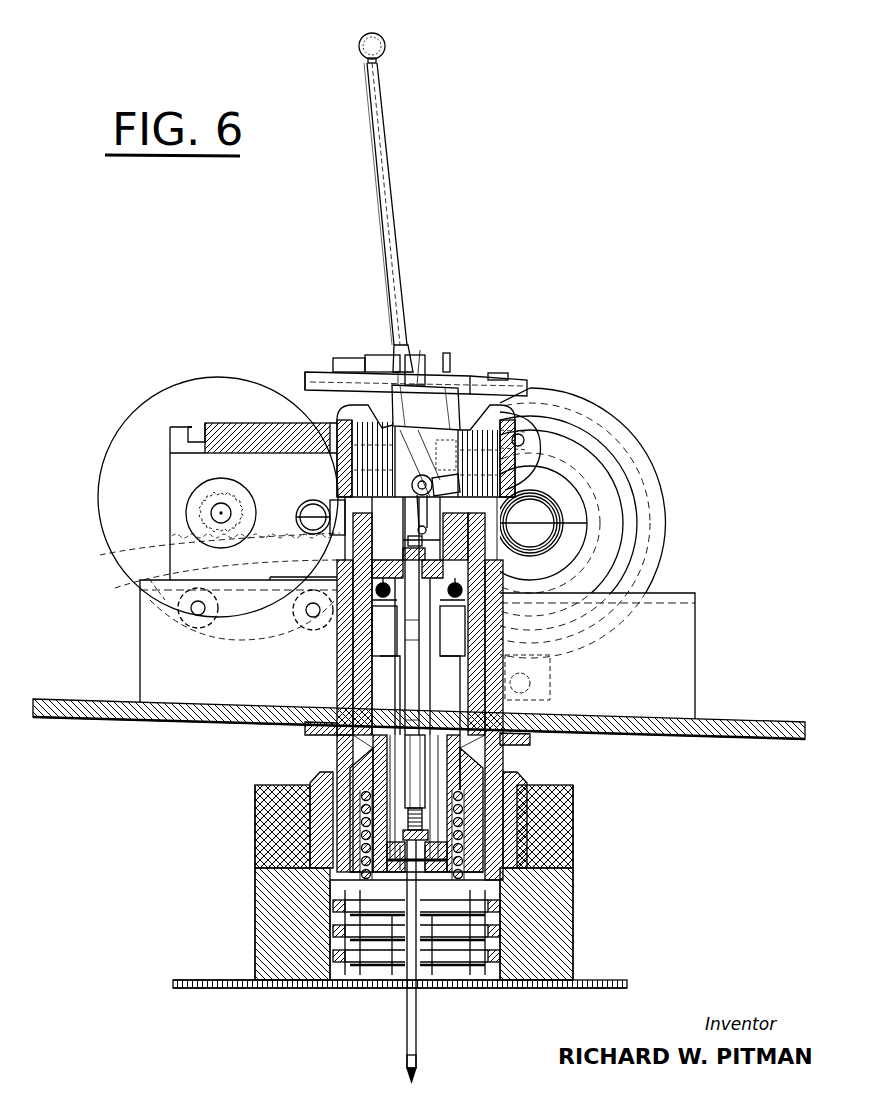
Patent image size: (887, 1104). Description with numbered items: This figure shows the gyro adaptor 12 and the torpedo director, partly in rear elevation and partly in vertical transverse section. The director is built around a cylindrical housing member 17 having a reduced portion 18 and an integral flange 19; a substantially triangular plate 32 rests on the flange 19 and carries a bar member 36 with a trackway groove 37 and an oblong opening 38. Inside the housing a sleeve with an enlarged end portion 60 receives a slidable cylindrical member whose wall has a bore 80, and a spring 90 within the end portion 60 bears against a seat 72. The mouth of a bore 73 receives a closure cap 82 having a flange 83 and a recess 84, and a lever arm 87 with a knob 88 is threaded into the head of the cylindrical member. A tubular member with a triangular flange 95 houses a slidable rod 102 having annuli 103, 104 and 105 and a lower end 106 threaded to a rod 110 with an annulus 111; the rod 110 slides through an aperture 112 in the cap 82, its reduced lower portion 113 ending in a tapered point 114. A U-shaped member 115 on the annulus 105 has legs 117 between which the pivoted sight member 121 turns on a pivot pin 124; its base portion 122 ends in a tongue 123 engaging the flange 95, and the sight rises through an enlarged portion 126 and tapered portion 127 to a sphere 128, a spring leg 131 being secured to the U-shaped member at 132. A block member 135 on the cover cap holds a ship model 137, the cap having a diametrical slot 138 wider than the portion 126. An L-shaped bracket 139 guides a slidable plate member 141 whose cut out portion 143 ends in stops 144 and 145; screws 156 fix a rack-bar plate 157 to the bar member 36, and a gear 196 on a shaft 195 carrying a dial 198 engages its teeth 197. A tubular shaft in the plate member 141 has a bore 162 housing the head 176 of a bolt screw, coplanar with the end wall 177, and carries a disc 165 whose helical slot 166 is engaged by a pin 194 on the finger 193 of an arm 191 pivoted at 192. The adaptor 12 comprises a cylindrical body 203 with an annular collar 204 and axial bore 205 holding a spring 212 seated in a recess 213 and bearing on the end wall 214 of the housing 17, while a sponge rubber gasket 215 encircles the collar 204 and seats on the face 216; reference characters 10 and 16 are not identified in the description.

The tool assembly 10 is at (210, 972).
The adaptor 12 is at (560, 975).
The housing bottom 16 is at (552, 988).
The cylindrical housing member 17 is at (492, 752).
The reduced portion 18 is at (345, 561).
The integral flange 19 is at (532, 740).
The plate 32 is at (95, 722).
The bar member 36 is at (145, 672).
The trackway groove 37 is at (148, 598).
The oblong opening 38 is at (337, 667).
The enlarged end portion 60 is at (510, 800).
The seat 72 is at (462, 783).
The bore 73 is at (340, 918).
The bore 80 is at (416, 810).
The closure cap 82 is at (435, 960).
The flange 83 is at (478, 950).
The recess 84 is at (403, 935).
The lever arm 87 is at (575, 662).
The knob 88 is at (560, 683).
The spring 90 is at (575, 835).
The triangular shaped flange 95 is at (545, 400).
The rod 102 is at (337, 674).
The annulus 103 is at (348, 770).
The annulus 104 is at (337, 648).
The annulus 105 is at (474, 616).
The end of rod 106 is at (440, 793).
The rod 110 is at (402, 960).
The annulus 111 is at (423, 824).
The aperture 112 is at (358, 960).
The lower portion 113 is at (416, 1033).
The end 114 is at (385, 1077).
The U-shaped member 115 is at (397, 540).
The legs 117 is at (456, 536).
The pivoted sight member 121 is at (415, 283).
The base portion 122 is at (439, 488).
The tongue 123 is at (444, 461).
The pivot pin 124 is at (426, 451).
The enlarged portion 126 is at (425, 362).
The tapered portion 127 is at (397, 178).
The sphere 128 is at (388, 38).
The leg 131 is at (405, 511).
The securing point 132 is at (412, 528).
The block member 135 is at (450, 402).
The ship model 137 is at (348, 385).
The diametrical slot 138 is at (338, 384).
The L-shaped bracket 139 is at (236, 425).
The plate member 141 is at (172, 457).
The cut out portion 143 is at (194, 440).
The stop 144 is at (185, 448).
The stop 145 is at (520, 390).
The screws 156 is at (193, 612).
The rack-bar plate 157 is at (130, 582).
The bore 162 is at (628, 484).
The disc 165 is at (603, 457).
The helical slot 166 is at (620, 455).
The head 176 is at (556, 516).
The end wall 177 is at (573, 535).
The arm 191 is at (566, 476).
The pivot 192 is at (305, 505).
The finger 193 is at (524, 438).
The pin 194 is at (560, 432).
The shaft 195 is at (218, 513).
The gear 196 is at (205, 500).
The teeth 197 is at (115, 553).
The dial 198 is at (114, 466).
The cylindrical body 203 is at (550, 953).
The annular collar 204 is at (316, 784).
The axial bore 205 is at (490, 922).
The spring 212 is at (487, 975).
The recess 213 is at (325, 955).
The end wall 214 is at (515, 905).
The sponge rubber gasket 215 is at (255, 827).
The face 216 is at (330, 892).